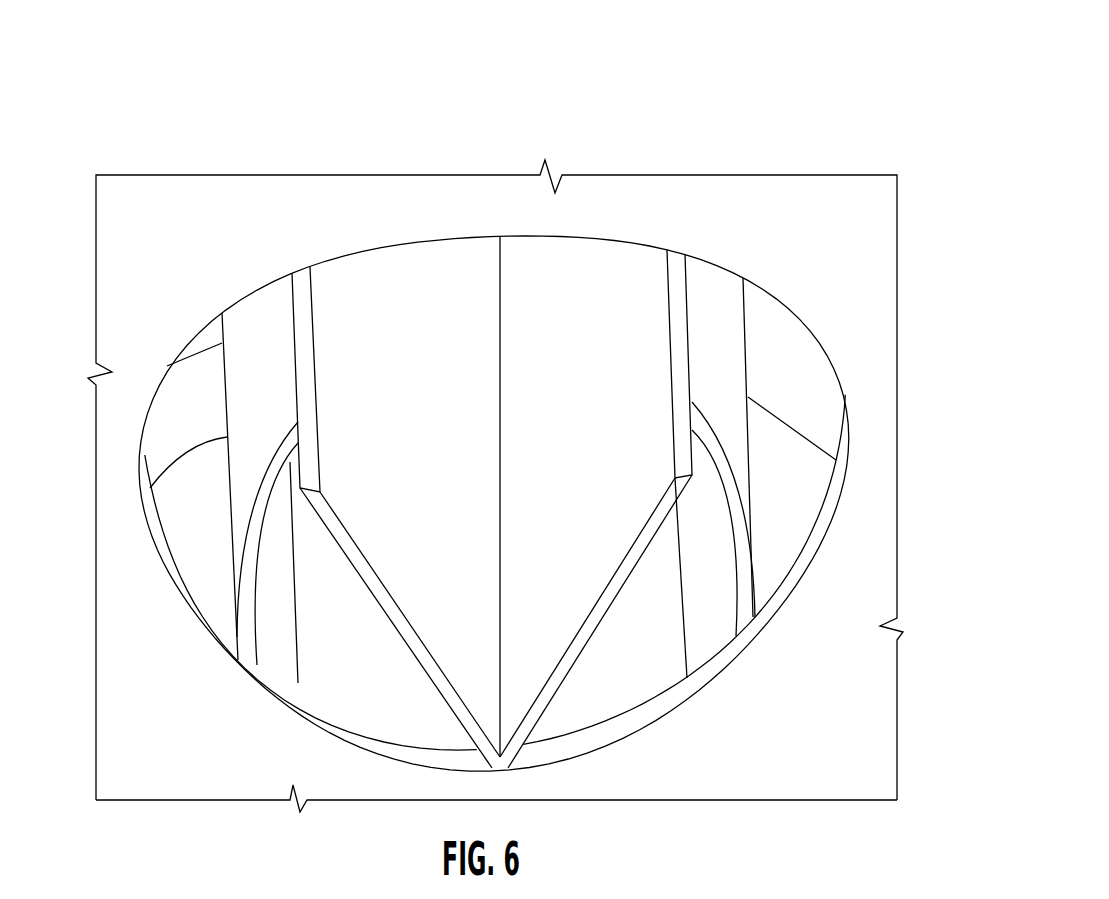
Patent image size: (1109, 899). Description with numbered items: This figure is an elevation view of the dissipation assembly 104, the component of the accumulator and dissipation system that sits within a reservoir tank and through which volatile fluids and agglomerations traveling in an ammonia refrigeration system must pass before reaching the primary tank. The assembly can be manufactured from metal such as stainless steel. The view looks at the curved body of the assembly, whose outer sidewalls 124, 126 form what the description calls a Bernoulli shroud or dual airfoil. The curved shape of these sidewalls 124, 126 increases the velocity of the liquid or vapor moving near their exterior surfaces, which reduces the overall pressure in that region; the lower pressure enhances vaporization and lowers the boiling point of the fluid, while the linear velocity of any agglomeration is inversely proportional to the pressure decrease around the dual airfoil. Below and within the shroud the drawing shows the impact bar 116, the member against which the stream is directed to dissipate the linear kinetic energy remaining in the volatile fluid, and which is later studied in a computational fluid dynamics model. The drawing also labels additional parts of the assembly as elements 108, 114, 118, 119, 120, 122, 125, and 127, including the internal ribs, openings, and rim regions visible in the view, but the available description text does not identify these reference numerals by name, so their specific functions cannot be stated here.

The dissipation assembly 104 is at (747, 72).
The panel 108 is at (877, 247).
The rim 114 is at (834, 509).
The impact bar 116 is at (705, 783).
The left rib 118 is at (377, 293).
The opening 119 is at (350, 680).
The right rib 120 is at (624, 293).
The central rib 122 is at (445, 267).
The outer sidewall 124 is at (263, 320).
The inner edge 125 is at (150, 488).
The outer sidewall 126 is at (718, 295).
The right opening 127 is at (815, 378).